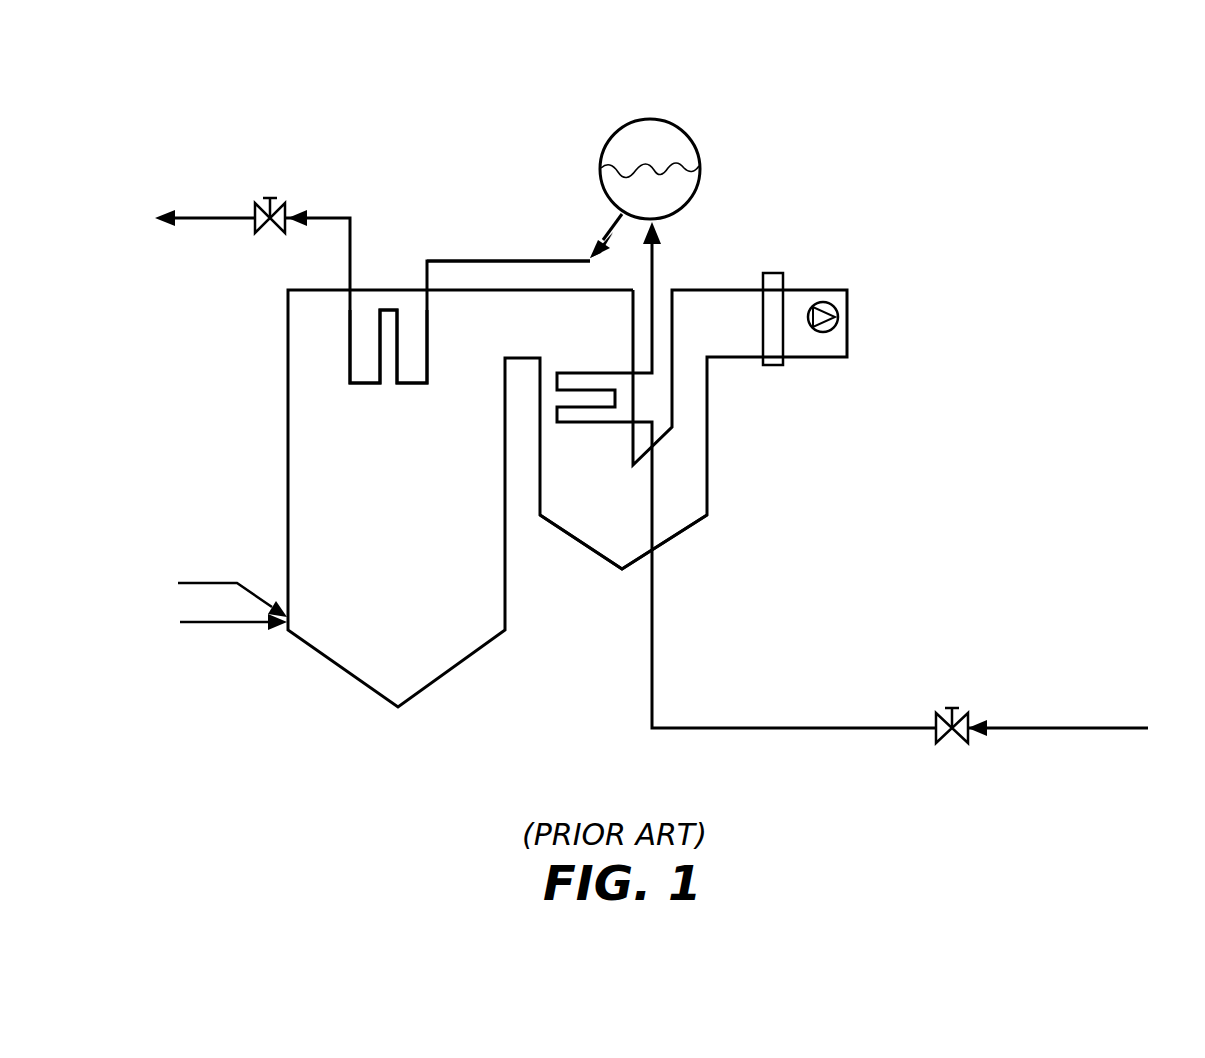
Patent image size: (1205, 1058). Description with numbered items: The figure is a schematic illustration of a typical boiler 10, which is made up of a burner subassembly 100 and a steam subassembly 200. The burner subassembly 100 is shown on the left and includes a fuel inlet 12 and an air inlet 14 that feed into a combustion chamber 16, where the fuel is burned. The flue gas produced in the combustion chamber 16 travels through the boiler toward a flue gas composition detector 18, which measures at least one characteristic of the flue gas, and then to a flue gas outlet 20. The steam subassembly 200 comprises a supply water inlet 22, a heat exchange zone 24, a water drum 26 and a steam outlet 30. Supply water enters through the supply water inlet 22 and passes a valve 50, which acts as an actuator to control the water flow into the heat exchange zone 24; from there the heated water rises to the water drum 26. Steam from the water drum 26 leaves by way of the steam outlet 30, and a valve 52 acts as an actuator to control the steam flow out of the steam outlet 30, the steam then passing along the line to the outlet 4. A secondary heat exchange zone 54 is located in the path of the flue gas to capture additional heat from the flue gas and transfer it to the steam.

The steam outlet line 4 is at (183, 212).
The boiler 10 is at (937, 542).
The fuel inlet 12 is at (207, 622).
The air inlet 14 is at (200, 583).
The combustion chamber 16 is at (303, 442).
The flue gas composition detector 18 is at (770, 273).
The flue gas outlet 20 is at (838, 325).
The supply water inlet 22 is at (1100, 728).
The heat exchange zone 24 is at (606, 529).
The water drum 26 is at (688, 134).
The steam outlet 30 is at (483, 260).
The valve 50 is at (952, 708).
The valve 52 is at (270, 198).
The secondary heat exchange zone 54 is at (378, 308).
The burner subassembly 100 is at (196, 465).
The steam subassembly 200 is at (678, 82).